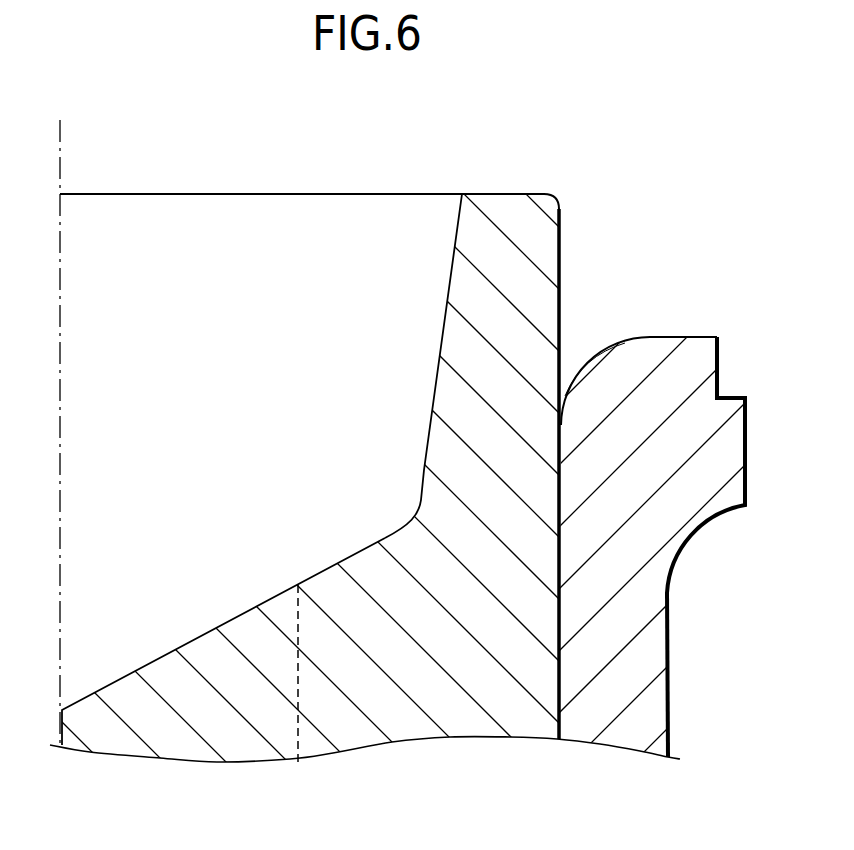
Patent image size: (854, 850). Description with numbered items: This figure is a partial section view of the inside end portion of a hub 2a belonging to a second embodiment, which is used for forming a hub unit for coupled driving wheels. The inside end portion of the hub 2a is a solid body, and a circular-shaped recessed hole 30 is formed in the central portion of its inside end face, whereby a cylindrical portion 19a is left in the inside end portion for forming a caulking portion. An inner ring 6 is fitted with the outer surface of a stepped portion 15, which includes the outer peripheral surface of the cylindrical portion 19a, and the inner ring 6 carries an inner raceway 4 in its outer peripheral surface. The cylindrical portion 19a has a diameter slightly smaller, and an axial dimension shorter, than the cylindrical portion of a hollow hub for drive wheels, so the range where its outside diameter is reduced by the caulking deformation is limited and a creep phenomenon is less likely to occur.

The cylindrical portion 19a is at (436, 372).
The hub 2a is at (453, 712).
The circular-shaped recessed hole 30 is at (232, 618).
The stepped portion 15 is at (562, 652).
The inner raceway 4 is at (681, 551).
The inner ring 6 is at (651, 708).